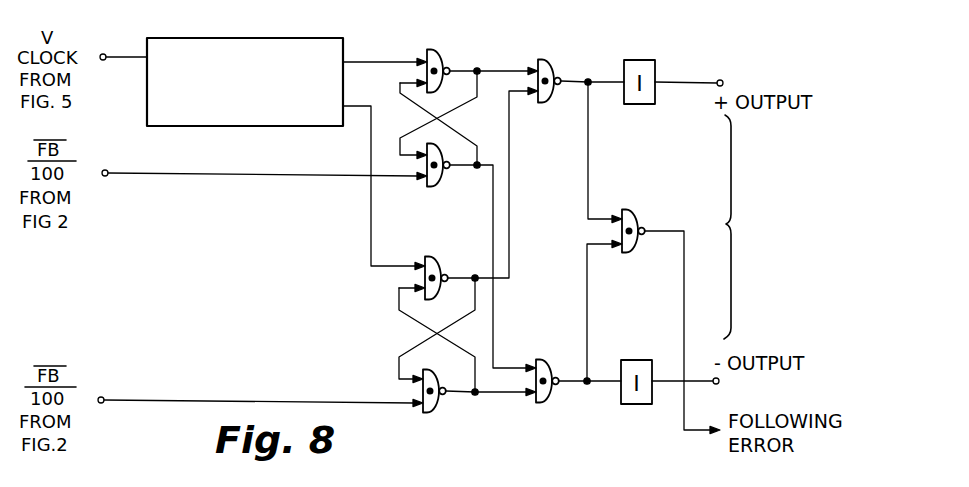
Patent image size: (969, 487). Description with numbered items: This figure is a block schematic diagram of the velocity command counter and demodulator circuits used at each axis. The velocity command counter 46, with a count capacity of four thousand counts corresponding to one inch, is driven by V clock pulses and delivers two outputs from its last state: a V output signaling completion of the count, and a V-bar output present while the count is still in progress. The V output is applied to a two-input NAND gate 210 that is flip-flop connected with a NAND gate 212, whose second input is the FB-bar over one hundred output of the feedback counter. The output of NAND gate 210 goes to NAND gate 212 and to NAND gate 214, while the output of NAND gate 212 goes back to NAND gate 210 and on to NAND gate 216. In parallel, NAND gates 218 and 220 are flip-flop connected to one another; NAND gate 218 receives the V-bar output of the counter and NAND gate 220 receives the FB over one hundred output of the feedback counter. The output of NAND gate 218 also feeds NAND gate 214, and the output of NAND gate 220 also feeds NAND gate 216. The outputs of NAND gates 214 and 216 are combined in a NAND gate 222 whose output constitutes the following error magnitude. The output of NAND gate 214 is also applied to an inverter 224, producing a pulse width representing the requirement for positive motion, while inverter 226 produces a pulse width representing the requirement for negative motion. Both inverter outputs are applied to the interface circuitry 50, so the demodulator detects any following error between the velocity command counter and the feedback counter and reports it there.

The velocity command counter 46 is at (304, 43).
The NAND gate 210 is at (438, 46).
The NAND gate 212 is at (441, 187).
The NAND gate 214 is at (547, 58).
The NAND gate 216 is at (556, 349).
The NAND gate 218 is at (438, 257).
The NAND gate 220 is at (439, 408).
The NAND gate 222 is at (629, 211).
The inverter 224 is at (634, 60).
The inverter 226 is at (651, 349).
The interface circuitry 50 is at (802, 227).